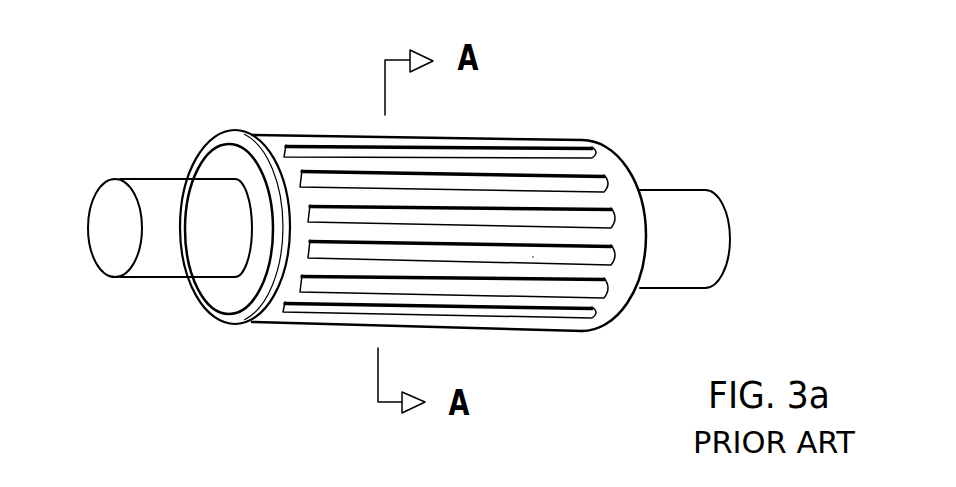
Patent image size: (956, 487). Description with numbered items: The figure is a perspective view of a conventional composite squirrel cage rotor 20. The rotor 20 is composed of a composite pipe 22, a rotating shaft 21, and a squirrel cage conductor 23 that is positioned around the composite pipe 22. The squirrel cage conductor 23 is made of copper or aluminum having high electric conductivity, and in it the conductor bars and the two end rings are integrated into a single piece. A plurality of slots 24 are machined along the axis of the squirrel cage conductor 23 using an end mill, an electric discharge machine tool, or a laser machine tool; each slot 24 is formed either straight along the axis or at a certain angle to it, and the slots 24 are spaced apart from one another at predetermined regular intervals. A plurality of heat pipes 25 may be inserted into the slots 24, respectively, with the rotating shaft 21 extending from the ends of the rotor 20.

The composite squirrel cage rotor 20 is at (412, 213).
The rotating shaft 21 is at (165, 178).
The composite pipe 22 is at (223, 293).
The squirrel cage conductor 23 is at (623, 180).
The slots 24 is at (567, 247).
The heat pipes 25 is at (533, 257).